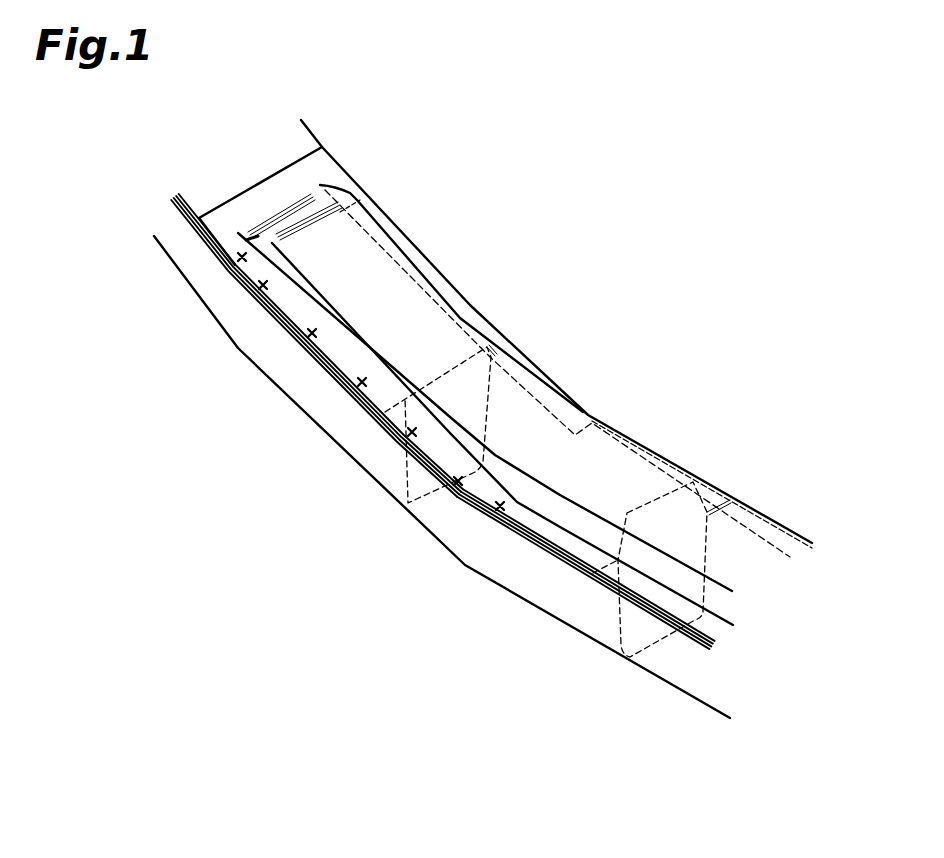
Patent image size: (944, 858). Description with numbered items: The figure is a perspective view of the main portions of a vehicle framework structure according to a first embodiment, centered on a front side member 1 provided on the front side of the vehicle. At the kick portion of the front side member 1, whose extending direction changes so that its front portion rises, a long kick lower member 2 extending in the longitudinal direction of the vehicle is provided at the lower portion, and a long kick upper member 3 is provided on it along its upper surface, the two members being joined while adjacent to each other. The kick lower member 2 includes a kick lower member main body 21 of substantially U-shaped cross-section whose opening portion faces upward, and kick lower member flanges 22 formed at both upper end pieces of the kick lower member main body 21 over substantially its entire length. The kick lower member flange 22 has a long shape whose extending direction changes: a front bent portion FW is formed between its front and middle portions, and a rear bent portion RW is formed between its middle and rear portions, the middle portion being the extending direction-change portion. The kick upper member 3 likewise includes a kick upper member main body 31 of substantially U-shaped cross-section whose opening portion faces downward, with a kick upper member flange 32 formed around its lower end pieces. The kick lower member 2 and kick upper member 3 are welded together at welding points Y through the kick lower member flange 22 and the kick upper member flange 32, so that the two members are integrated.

The front side member 1 is at (536, 236).
The kick lower member 2 is at (443, 507).
The kick lower member main body 21 is at (553, 595).
The kick lower member flange 22 is at (517, 532).
The kick upper member 3 is at (527, 388).
The kick upper member main body 31 is at (518, 398).
The kick upper member flange 32 is at (547, 530).
The front bent portion FW is at (257, 270).
The rear bent portion RW is at (478, 487).
The welding points Y is at (262, 290).